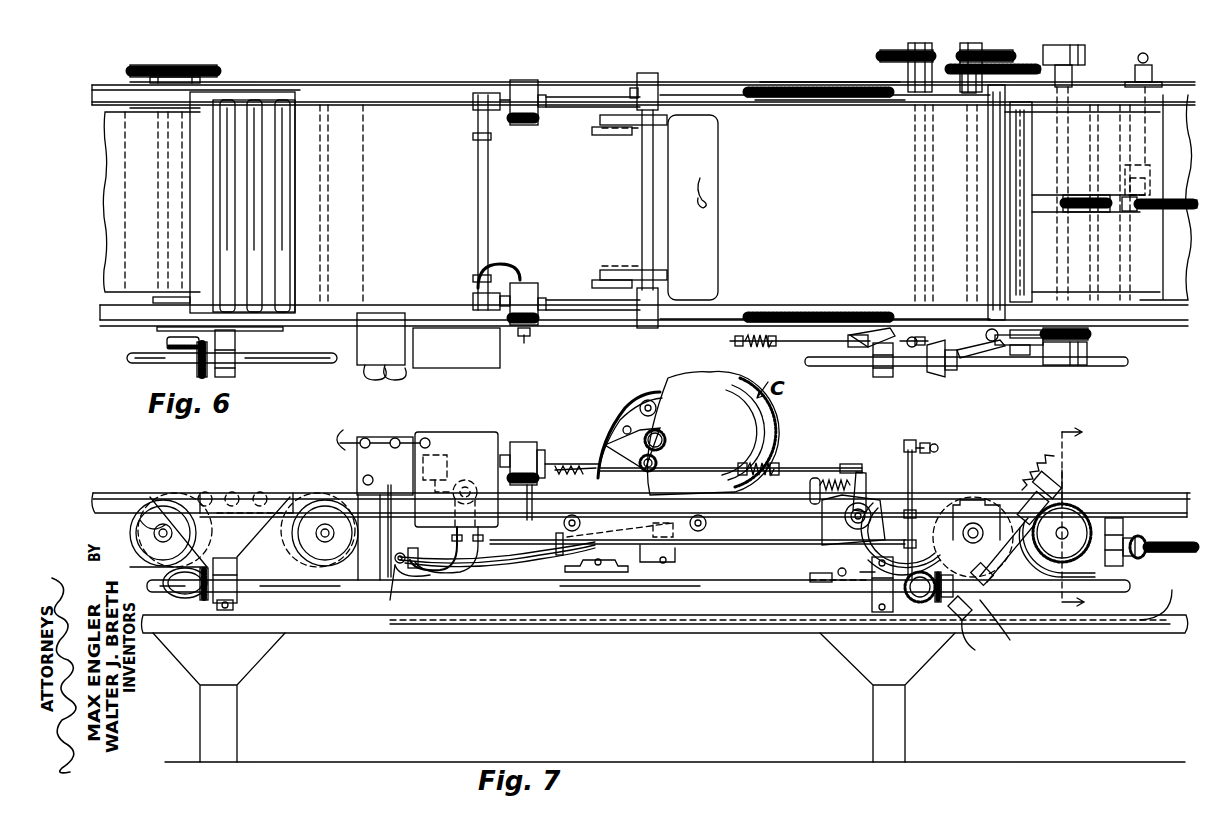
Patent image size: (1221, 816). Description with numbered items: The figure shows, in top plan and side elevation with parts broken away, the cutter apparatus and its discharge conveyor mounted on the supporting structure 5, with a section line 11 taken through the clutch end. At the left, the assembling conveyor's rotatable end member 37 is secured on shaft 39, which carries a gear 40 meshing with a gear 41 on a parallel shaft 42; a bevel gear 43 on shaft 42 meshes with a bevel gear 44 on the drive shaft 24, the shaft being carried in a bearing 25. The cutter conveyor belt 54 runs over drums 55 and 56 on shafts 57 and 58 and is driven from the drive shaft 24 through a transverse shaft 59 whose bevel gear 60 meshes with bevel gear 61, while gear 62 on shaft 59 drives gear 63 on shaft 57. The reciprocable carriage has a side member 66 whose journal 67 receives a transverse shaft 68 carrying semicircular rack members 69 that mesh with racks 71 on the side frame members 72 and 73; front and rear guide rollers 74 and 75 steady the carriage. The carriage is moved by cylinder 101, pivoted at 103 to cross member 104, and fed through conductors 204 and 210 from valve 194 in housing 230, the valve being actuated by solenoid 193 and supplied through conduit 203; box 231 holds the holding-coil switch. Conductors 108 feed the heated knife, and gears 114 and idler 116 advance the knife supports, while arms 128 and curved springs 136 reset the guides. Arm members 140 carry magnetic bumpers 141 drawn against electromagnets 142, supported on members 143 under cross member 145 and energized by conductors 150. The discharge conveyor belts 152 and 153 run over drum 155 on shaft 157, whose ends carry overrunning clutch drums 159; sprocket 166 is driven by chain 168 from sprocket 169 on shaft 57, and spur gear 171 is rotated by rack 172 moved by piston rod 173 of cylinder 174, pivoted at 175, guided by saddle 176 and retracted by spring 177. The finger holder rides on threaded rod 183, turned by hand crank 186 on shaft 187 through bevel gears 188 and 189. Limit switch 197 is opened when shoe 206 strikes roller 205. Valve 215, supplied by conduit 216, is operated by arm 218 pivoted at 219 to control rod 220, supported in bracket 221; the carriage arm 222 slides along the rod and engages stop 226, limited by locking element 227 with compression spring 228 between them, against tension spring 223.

In FIG. 7, the supporting structure 5 is at (238, 712).
In FIG. 7, the section line 11 is at (1057, 520).
In FIG. 6, the drive shaft 24 is at (272, 362).
In FIG. 7, the drive shaft 24 is at (720, 592).
In FIG. 6, the shaft bearing 25 is at (228, 378).
In FIG. 7, the shaft bearing 25 is at (237, 595).
In FIG. 6, the rotatable end member 37 is at (122, 180).
In FIG. 7, the rotatable end member 37 is at (135, 535).
In FIG. 6, the shaft 39 is at (160, 232).
In FIG. 7, the shaft 39 is at (168, 530).
In FIG. 6, the gear 40 is at (132, 70).
In FIG. 6, the gear 41 is at (215, 70).
In FIG. 6, the shaft 42 is at (180, 160).
In FIG. 6, the bevel gear 43 is at (167, 342).
In FIG. 7, the bevel gear 43 is at (180, 600).
In FIG. 6, the bevel gear 44 is at (198, 373).
In FIG. 7, the bevel gear 44 is at (205, 600).
In FIG. 6, the conveyor belt 54 is at (396, 215).
In FIG. 7, the conveyor belt 54 is at (322, 490).
In FIG. 7, the drum 55 is at (905, 530).
In FIG. 7, the drum 56 is at (295, 545).
In FIG. 6, the shaft 57 is at (967, 246).
In FIG. 7, the shaft 57 is at (975, 522).
In FIG. 6, the shaft 58 is at (337, 232).
In FIG. 7, the shaft 58 is at (325, 525).
In FIG. 6, the transverse shaft 59 is at (915, 212).
In FIG. 6, the bevel gear 60 is at (925, 352).
In FIG. 7, the bevel gear 60 is at (915, 602).
In FIG. 6, the bevel gear 61 is at (935, 375).
In FIG. 7, the bevel gear 61 is at (940, 604).
In FIG. 6, the gear 62 is at (882, 55).
In FIG. 6, the gear 63 is at (992, 50).
In FIG. 7, the side member 66 is at (680, 562).
In FIG. 6, the journal 67 is at (637, 88).
In FIG. 6, the transverse shaft 68 is at (645, 208).
In FIG. 7, the transverse shaft 68 is at (658, 408).
In FIG. 6, the semicircular rack member 69 is at (708, 93).
In FIG. 7, the semicircular rack member 69 is at (702, 420).
In FIG. 6, the rack member 71 is at (803, 100).
In FIG. 6, the side frame member 72 is at (415, 84).
In FIG. 6, the side frame member 73 is at (378, 306).
In FIG. 7, the side frame member 73 is at (1152, 496).
In FIG. 7, the front guide roller 74 is at (706, 523).
In FIG. 7, the rear guide roller 75 is at (565, 521).
In FIG. 7, the cylinder 101 is at (520, 560).
In FIG. 7, the pivot 103 is at (418, 568).
In FIG. 7, the cross member 104 is at (400, 565).
In FIG. 6, the conductors 108 is at (708, 198).
In FIG. 7, the gear 114 is at (644, 462).
In FIG. 7, the intermediate idling gear 116 is at (665, 440).
In FIG. 6, the arm 128 is at (595, 138).
In FIG. 7, the arm 128 is at (590, 420).
In FIG. 6, the curved spring member 136 is at (605, 120).
In FIG. 7, the curved spring member 136 is at (650, 395).
In FIG. 6, the arm member 140 is at (580, 95).
In FIG. 6, the bumper 141 is at (548, 92).
In FIG. 7, the bumper 141 is at (552, 448).
In FIG. 6, the electromagnet 142 is at (522, 82).
In FIG. 7, the electromagnet 142 is at (525, 440).
In FIG. 6, the support member 143 is at (498, 318).
In FIG. 6, the cross member 145 is at (490, 172).
In FIG. 6, the electrical conductors 150 is at (492, 270).
In FIG. 6, the endless belt 152 is at (1160, 118).
In FIG. 6, the endless belt 153 is at (1140, 290).
In FIG. 6, the drum 155 is at (1085, 196).
In FIG. 6, the shaft 157 is at (1068, 270).
In FIG. 6, the drum 159 is at (1080, 50).
In FIG. 7, the drum 159 is at (1068, 520).
In FIG. 6, the sprocket 166 is at (1072, 78).
In FIG. 6, the chain 168 is at (1022, 65).
In FIG. 6, the sprocket 169 is at (968, 95).
In FIG. 7, the spur gear 171 is at (1110, 518).
In FIG. 6, the rack 172 is at (1088, 336).
In FIG. 7, the rack 172 is at (1012, 560).
In FIG. 7, the piston rod 173 is at (975, 592).
In FIG. 6, the cylinder 174 is at (980, 360).
In FIG. 7, the cylinder 174 is at (1000, 628).
In FIG. 7, the pivot 175 is at (972, 650).
In FIG. 6, the saddle member 176 is at (1015, 350).
In FIG. 7, the saddle member 176 is at (1062, 478).
In FIG. 7, the spring 177 is at (1030, 485).
In FIG. 6, the threaded rod 183 is at (1140, 212).
In FIG. 7, the threaded rod 183 is at (1165, 553).
In FIG. 6, the hand crank 186 is at (1146, 56).
In FIG. 6, the shaft 187 is at (1145, 150).
In FIG. 6, the bevel gear 188 is at (1150, 180).
In FIG. 7, the bevel gear 188 is at (1148, 540).
In FIG. 6, the bevel gear 189 is at (1138, 238).
In FIG. 7, the bevel gear 189 is at (1168, 590).
In FIG. 7, the solenoid 193 is at (447, 458).
In FIG. 7, the valve 194 is at (470, 482).
In FIG. 7, the limit switch 197 is at (810, 577).
In FIG. 7, the supply conduit 203 is at (935, 445).
In FIG. 7, the tubular conductor 204 is at (455, 590).
In FIG. 7, the roller 205 is at (845, 562).
In FIG. 7, the shoe 206 is at (622, 575).
In FIG. 7, the tubular conductor 210 is at (452, 530).
In FIG. 6, the valve 215 is at (845, 348).
In FIG. 7, the valve 215 is at (845, 525).
In FIG. 7, the conduit 216 is at (915, 505).
In FIG. 6, the arm 218 is at (870, 352).
In FIG. 7, the arm 218 is at (864, 492).
In FIG. 7, the pivot 219 is at (862, 470).
In FIG. 7, the control rod 220 is at (782, 470).
In FIG. 7, the supporting bracket 221 is at (534, 505).
In FIG. 6, the extension arm 222 is at (544, 340).
In FIG. 7, the extension arm 222 is at (598, 448).
In FIG. 7, the tension spring 223 is at (814, 497).
In FIG. 6, the stop 226 is at (737, 344).
In FIG. 7, the stop 226 is at (743, 462).
In FIG. 6, the locking element 227 is at (770, 346).
In FIG. 7, the locking element 227 is at (778, 464).
In FIG. 7, the compression spring 228 is at (775, 462).
In FIG. 6, the housing 230 is at (450, 362).
In FIG. 7, the housing 230 is at (442, 432).
In FIG. 6, the box 231 is at (378, 365).
In FIG. 7, the box 231 is at (372, 435).